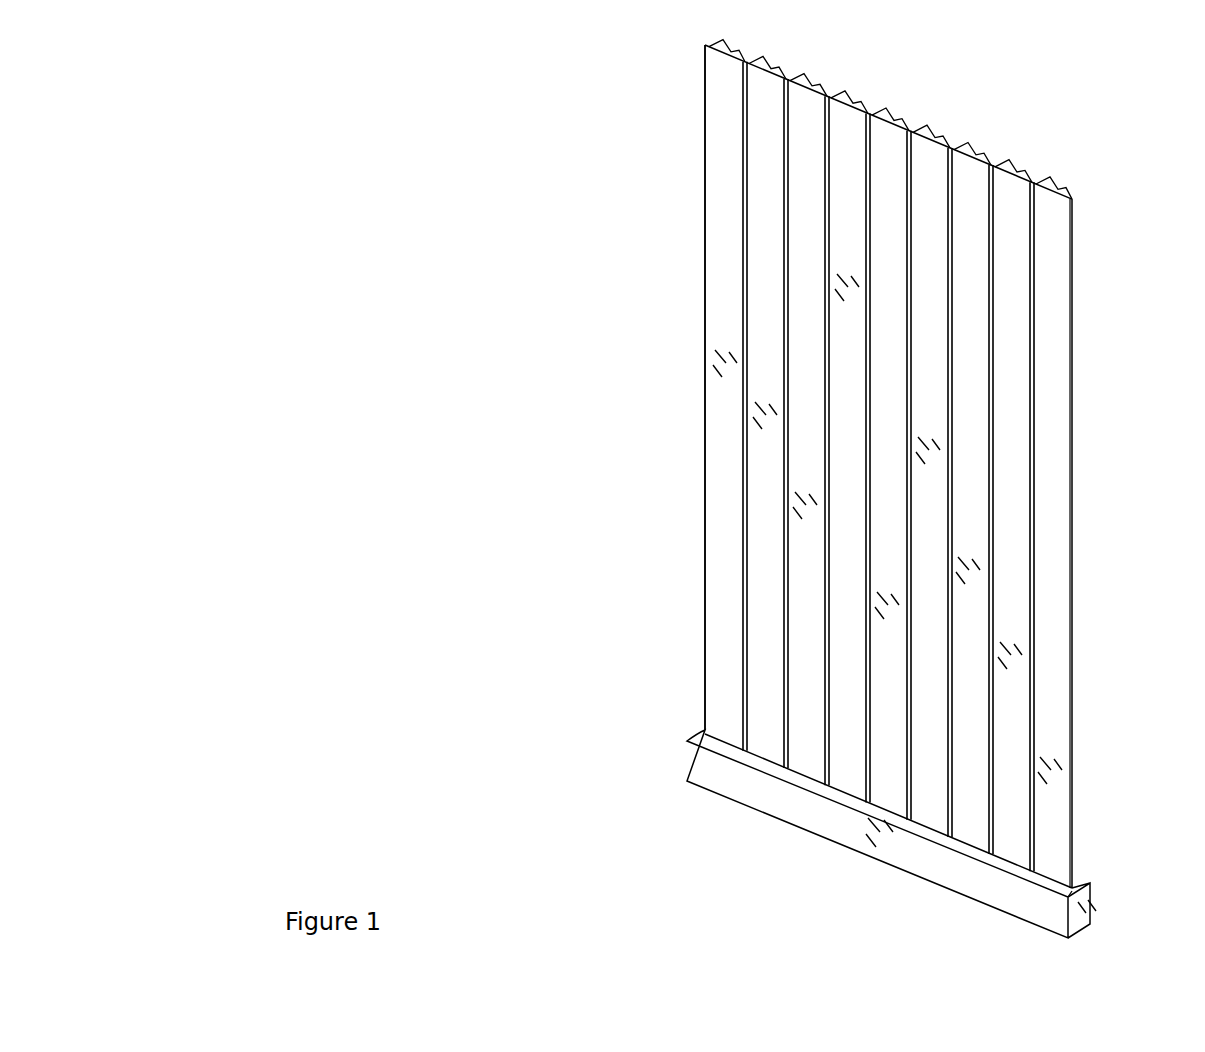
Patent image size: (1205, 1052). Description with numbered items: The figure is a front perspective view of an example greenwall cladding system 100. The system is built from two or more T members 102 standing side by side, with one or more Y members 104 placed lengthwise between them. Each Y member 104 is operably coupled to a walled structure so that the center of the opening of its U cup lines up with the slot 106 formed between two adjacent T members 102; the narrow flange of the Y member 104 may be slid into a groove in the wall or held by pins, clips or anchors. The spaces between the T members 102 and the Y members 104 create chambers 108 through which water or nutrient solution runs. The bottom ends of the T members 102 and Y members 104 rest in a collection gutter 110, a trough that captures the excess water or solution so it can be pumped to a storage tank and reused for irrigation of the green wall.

The greenwall cladding system 100 is at (400, 138).
The T member 102 is at (1055, 247).
The Y member 104 is at (1048, 172).
The slot 106 is at (736, 209).
The chamber 108 is at (930, 122).
The collection gutter 110 is at (700, 765).